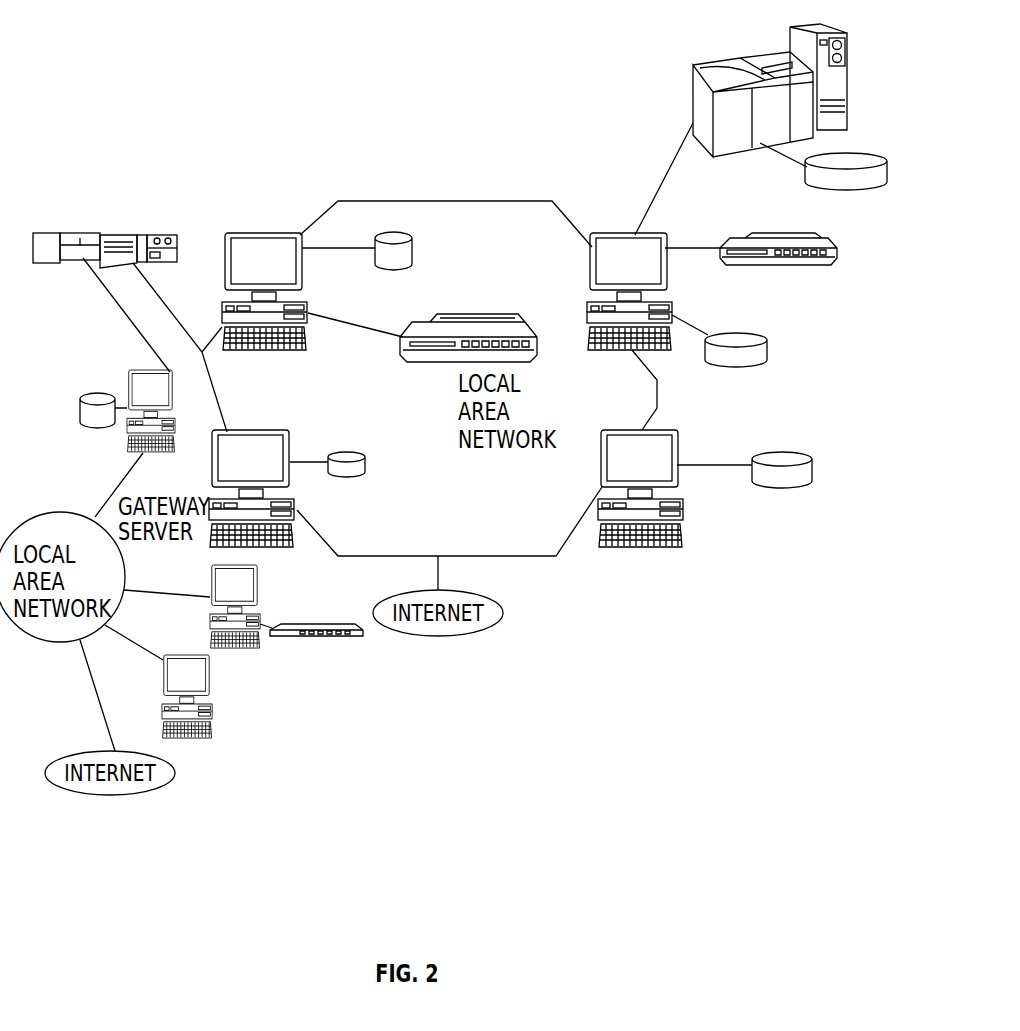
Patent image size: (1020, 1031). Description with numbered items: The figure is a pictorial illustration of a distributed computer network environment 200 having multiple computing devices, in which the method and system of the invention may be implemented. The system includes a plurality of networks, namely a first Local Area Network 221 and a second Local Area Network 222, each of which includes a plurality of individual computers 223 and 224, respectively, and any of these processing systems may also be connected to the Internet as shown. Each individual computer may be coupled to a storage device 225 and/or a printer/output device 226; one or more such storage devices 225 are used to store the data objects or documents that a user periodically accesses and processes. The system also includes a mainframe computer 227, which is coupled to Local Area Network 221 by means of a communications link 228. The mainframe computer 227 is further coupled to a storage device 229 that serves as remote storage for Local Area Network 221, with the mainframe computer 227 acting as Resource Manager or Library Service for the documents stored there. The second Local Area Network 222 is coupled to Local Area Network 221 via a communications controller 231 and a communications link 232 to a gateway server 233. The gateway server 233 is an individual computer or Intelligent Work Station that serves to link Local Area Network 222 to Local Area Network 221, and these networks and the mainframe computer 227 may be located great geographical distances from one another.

The network system 200 is at (446, 170).
The Local Area Network 221 is at (556, 557).
The Local Area Network 222 is at (55, 512).
The individual computers 223 is at (250, 233).
The individual computers 224 is at (257, 573).
The storage device 225 is at (412, 252).
The printer/output device 226 is at (468, 327).
The mainframe computer 227 is at (733, 68).
The communications link 228 is at (670, 165).
The storage device 229 is at (840, 153).
The communications controller 231 is at (172, 235).
The communications link 232 is at (118, 309).
The gateway server 233 is at (130, 374).